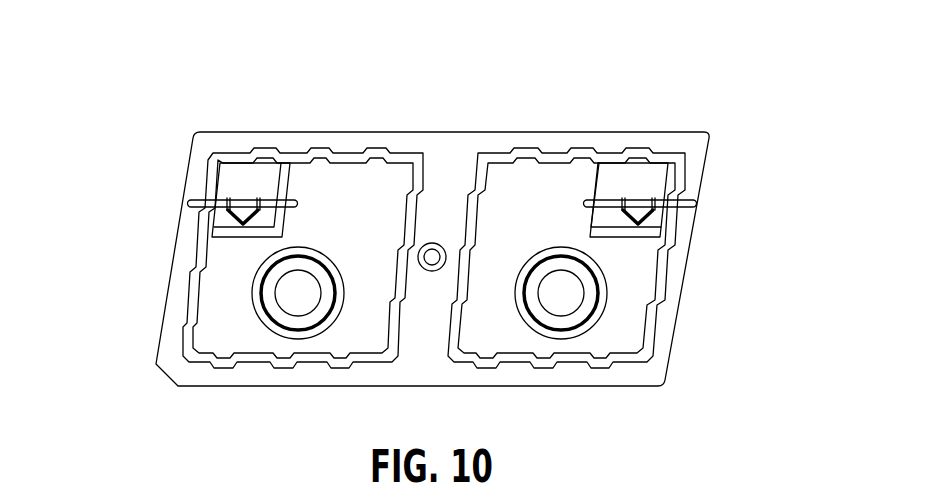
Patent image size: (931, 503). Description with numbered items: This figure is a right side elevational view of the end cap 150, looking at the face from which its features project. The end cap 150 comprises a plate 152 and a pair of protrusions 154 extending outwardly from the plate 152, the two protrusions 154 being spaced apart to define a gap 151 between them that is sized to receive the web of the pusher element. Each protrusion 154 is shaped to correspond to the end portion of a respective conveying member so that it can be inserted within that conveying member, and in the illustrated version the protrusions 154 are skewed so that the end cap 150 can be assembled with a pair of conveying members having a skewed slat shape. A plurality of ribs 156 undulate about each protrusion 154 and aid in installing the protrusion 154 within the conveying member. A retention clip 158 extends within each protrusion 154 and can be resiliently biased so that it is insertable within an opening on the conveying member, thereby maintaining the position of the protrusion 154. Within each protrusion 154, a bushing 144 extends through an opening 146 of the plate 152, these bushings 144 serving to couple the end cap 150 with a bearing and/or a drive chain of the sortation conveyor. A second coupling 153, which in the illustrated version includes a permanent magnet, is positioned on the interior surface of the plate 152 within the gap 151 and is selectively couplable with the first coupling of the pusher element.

The end cap 150 is at (433, 249).
The plate 152 is at (478, 145).
The second coupling 153 is at (434, 243).
The protrusion 154 is at (198, 232).
The ribs 156 is at (640, 153).
The retention clip 158 is at (191, 203).
The opening 146 is at (268, 312).
The bushing 144 is at (295, 301).
The gap 151 is at (410, 364).